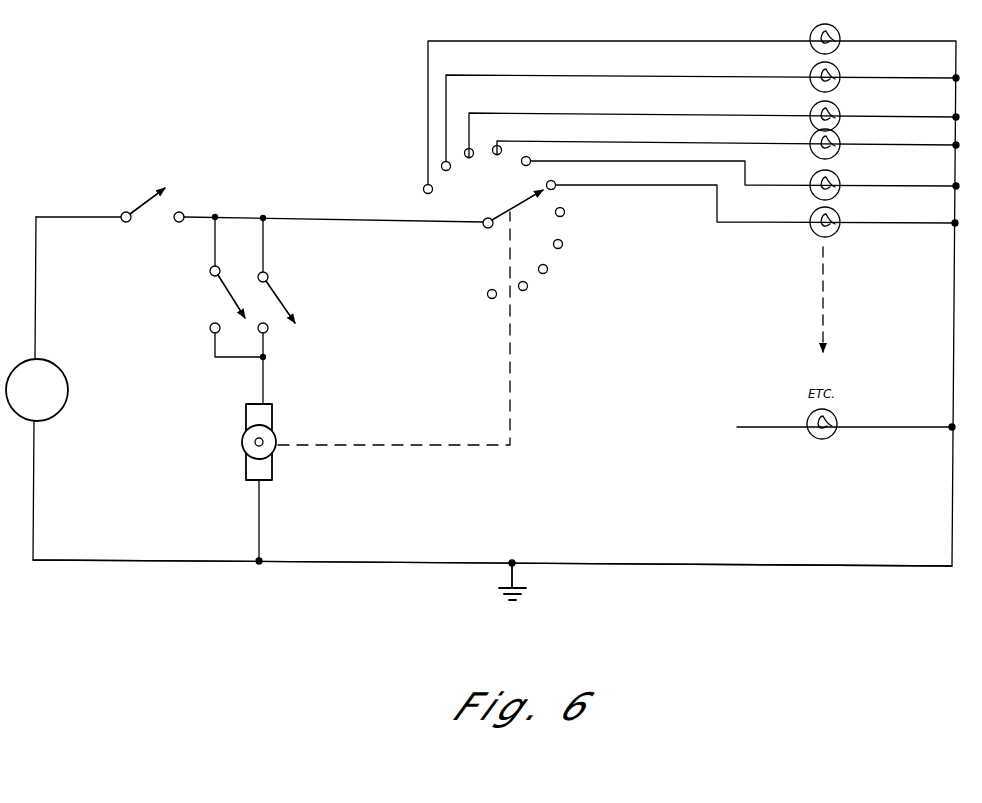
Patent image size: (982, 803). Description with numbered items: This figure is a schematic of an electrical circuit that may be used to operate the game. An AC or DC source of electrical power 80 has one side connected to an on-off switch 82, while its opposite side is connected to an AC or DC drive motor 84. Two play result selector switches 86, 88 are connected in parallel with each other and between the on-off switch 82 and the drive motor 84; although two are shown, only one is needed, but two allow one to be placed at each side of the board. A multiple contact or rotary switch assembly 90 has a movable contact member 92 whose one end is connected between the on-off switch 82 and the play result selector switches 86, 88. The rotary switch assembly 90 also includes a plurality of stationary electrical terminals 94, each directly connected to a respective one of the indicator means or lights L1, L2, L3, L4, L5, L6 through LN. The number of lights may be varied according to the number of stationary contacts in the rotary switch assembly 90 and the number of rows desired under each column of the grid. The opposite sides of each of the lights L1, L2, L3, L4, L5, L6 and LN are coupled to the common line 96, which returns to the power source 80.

The source of electrical power 80 is at (72, 393).
The on-off switch 82 is at (150, 200).
The drive motor 84 is at (246, 445).
The play result selector switch 86 is at (283, 305).
The play result selector switch 88 is at (238, 290).
The rotary switch assembly 90 is at (554, 254).
The movable contact member 92 is at (512, 206).
The stationary electrical terminals 94 is at (464, 153).
The common line 96 is at (664, 566).
The indicator light L1 is at (840, 34).
The indicator light L2 is at (840, 72).
The indicator light L3 is at (840, 111).
The indicator light L4 is at (840, 139).
The indicator light L5 is at (840, 180).
The indicator light L6 is at (840, 217).
The indicator light LN is at (837, 419).